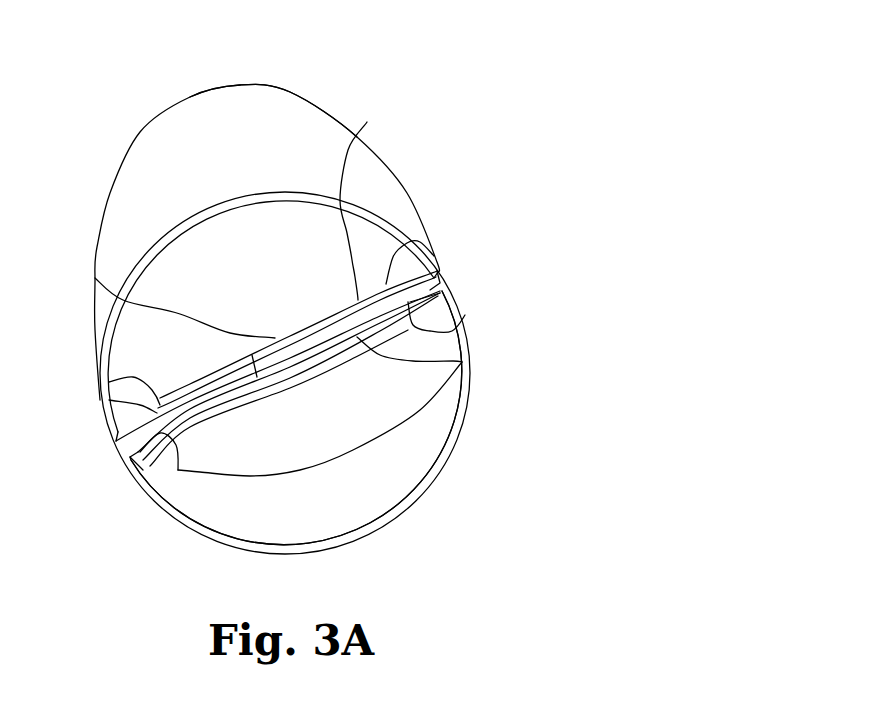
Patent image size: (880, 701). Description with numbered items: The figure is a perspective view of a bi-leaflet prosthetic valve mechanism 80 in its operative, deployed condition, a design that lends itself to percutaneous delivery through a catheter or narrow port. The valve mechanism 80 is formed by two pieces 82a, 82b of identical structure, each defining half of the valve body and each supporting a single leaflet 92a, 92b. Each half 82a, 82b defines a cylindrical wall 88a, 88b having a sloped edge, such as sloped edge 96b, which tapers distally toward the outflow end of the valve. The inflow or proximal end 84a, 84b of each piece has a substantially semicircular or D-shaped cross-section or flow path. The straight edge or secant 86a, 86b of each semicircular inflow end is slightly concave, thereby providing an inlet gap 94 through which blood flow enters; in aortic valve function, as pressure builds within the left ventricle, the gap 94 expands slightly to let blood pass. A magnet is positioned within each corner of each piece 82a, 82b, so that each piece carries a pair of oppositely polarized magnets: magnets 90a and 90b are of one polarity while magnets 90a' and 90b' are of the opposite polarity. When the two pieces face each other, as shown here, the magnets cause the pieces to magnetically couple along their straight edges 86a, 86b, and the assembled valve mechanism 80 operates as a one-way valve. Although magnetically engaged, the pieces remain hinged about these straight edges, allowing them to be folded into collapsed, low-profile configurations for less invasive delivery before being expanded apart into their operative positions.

The prosthetic valve mechanism 80 is at (423, 153).
The first piece of the valve body 82a is at (140, 132).
The second piece of the valve body 82b is at (440, 473).
The inflow end of first piece 84a is at (98, 335).
The inflow end of second piece 84b is at (187, 518).
The straight edge or secant of first piece 86a is at (280, 345).
The straight edge or secant of second piece 86b is at (289, 379).
The cylindrical wall of first piece 88a is at (274, 118).
The cylindrical wall of second piece 88b is at (360, 507).
The magnet 90a is at (89, 421).
The magnet of opposite polarity 90a' is at (439, 238).
The magnet 90b is at (473, 296).
The magnet of opposite polarity 90b' is at (118, 478).
The leaflet of first piece 92a is at (369, 197).
The leaflet of second piece 92b is at (460, 362).
The inlet gap 94 is at (95, 278).
The sloped edge of second piece 96b is at (252, 477).